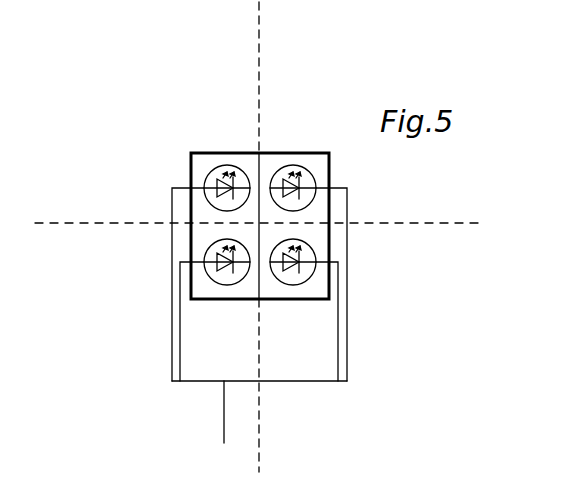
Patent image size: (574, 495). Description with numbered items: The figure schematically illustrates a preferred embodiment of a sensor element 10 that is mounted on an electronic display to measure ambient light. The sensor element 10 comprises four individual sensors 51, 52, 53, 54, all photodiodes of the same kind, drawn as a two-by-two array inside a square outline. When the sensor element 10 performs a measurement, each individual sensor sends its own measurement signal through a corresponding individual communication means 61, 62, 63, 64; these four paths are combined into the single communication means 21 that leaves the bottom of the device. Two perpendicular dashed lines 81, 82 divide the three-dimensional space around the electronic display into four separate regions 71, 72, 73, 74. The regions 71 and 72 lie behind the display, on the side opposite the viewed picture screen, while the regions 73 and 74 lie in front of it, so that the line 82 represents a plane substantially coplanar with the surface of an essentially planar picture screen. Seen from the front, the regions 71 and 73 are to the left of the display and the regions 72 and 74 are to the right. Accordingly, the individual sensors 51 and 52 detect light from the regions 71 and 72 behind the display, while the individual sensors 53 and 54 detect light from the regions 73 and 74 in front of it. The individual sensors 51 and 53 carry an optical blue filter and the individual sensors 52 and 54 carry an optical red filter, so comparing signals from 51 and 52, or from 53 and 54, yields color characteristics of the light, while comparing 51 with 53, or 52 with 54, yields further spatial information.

The sensor element 10 is at (258, 234).
The communication means 21 is at (212, 408).
The individual sensor 51 is at (225, 165).
The individual sensor 52 is at (293, 165).
The individual sensor 53 is at (226, 285).
The individual sensor 54 is at (292, 285).
The individual communication means 61 is at (170, 300).
The individual communication means 62 is at (348, 303).
The individual communication means 63 is at (178, 348).
The individual communication means 64 is at (340, 347).
The region 71 is at (74, 38).
The region 72 is at (434, 38).
The region 73 is at (72, 425).
The region 74 is at (430, 427).
The dashed line 81 is at (260, 48).
The dashed line 82 is at (442, 223).